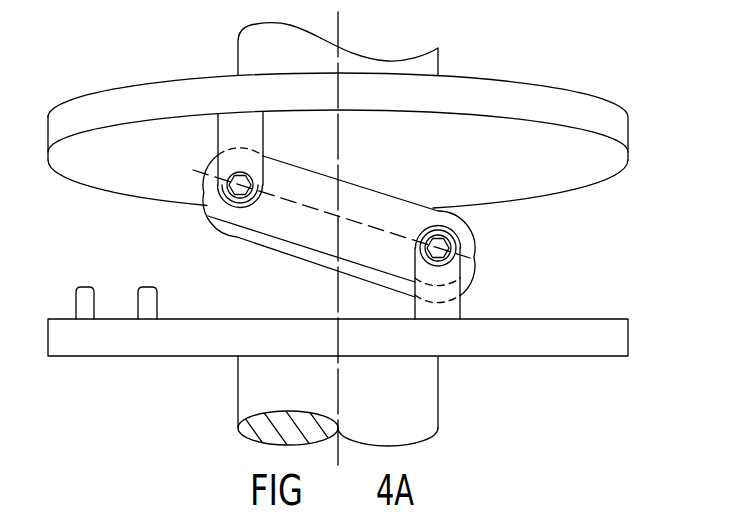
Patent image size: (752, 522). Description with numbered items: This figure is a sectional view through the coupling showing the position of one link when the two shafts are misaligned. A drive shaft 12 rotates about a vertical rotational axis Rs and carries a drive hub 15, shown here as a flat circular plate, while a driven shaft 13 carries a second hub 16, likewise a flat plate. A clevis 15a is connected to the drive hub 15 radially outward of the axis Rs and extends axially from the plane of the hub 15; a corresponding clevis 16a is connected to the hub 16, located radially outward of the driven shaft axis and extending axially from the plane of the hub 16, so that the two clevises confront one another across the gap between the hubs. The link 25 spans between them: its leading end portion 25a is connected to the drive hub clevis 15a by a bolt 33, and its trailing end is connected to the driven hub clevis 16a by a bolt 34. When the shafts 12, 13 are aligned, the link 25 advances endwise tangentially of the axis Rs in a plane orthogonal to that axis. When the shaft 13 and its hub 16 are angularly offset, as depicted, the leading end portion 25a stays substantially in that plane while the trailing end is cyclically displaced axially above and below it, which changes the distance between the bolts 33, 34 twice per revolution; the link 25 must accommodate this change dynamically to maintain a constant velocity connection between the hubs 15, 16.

The drive shaft 12 is at (396, 393).
The driven shaft 13 is at (426, 71).
The drive hub 15 is at (568, 343).
The clevis 15a is at (447, 310).
The hub 16 is at (548, 112).
The clevis 16a is at (238, 122).
The link 25 is at (360, 203).
The leading end portion 25a is at (470, 251).
The bolt 33 is at (420, 254).
The bolt 34 is at (238, 188).
The rotational axis Rs is at (338, 452).